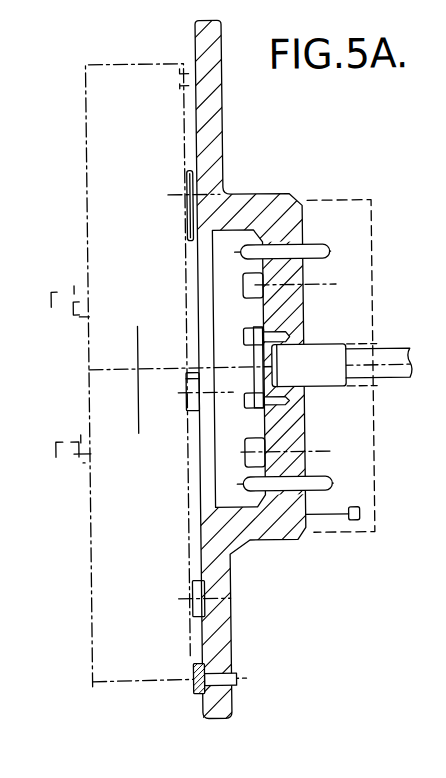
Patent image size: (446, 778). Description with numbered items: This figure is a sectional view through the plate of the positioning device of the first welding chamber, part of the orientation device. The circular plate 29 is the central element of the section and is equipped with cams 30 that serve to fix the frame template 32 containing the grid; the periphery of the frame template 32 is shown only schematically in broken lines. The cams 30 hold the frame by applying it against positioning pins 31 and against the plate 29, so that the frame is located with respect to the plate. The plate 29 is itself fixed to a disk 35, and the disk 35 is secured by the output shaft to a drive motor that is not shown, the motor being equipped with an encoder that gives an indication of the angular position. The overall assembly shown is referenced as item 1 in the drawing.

The rotary assembly 1 is at (153, 48).
The circular plate 29 is at (213, 108).
The cams 30 is at (193, 172).
The positioning pins 31 is at (198, 697).
The frame template 32 is at (87, 120).
The disk 35 is at (387, 357).